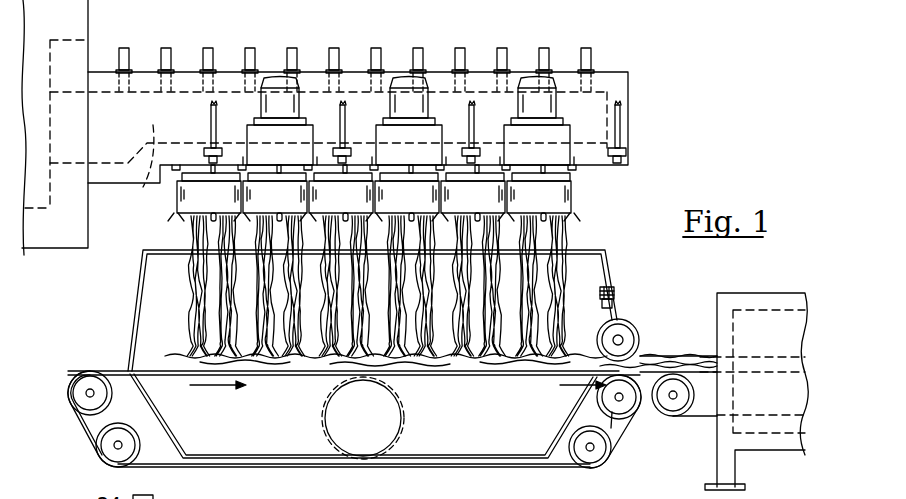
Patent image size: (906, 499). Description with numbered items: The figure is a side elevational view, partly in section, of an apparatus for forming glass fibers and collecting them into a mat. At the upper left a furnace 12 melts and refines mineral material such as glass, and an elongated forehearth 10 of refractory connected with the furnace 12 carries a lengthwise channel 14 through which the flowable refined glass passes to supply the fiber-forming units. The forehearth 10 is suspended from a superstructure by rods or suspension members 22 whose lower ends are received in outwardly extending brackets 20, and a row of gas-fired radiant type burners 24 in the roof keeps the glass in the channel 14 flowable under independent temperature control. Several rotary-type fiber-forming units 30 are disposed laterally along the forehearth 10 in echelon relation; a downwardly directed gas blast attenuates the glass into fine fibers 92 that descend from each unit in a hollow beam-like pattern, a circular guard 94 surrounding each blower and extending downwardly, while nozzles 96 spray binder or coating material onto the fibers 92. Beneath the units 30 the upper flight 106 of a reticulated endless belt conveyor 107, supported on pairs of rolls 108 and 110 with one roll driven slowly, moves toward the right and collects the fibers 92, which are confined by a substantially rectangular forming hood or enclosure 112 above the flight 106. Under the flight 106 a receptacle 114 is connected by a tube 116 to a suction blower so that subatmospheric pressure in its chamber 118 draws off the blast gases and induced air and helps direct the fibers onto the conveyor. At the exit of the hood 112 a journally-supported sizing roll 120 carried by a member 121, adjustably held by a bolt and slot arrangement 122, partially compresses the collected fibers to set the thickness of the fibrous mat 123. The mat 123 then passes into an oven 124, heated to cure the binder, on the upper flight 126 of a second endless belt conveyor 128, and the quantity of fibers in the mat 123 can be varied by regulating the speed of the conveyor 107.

The forehearth 10 is at (632, 71).
The furnace 12 is at (83, 22).
The channel 14 is at (147, 180).
The brackets 20 is at (211, 148).
The rods or suspension members 22 is at (211, 110).
The gas-fired radiant type burners 24 is at (162, 50).
The fiber-forming units 30 is at (292, 143).
The fibers 92 is at (258, 283).
The guard 94 is at (222, 203).
The nozzles 96 is at (172, 216).
The upper flight 106 is at (167, 368).
The endless belt conveyor 107 is at (490, 470).
The rolls 108 is at (98, 420).
The rolls 110 is at (612, 430).
The forming hood or enclosure 112 is at (603, 256).
The receptacle 114 is at (442, 456).
The tube 116 is at (368, 447).
The chamber 118 is at (480, 426).
The sizing roll 120 is at (632, 328).
The member 121 is at (612, 304).
The bolt and slot arrangement 122 is at (612, 292).
The fibrous mat 123 is at (660, 357).
The oven 124 is at (770, 293).
The upper flight 126 is at (714, 375).
The second endless belt conveyor 128 is at (707, 418).